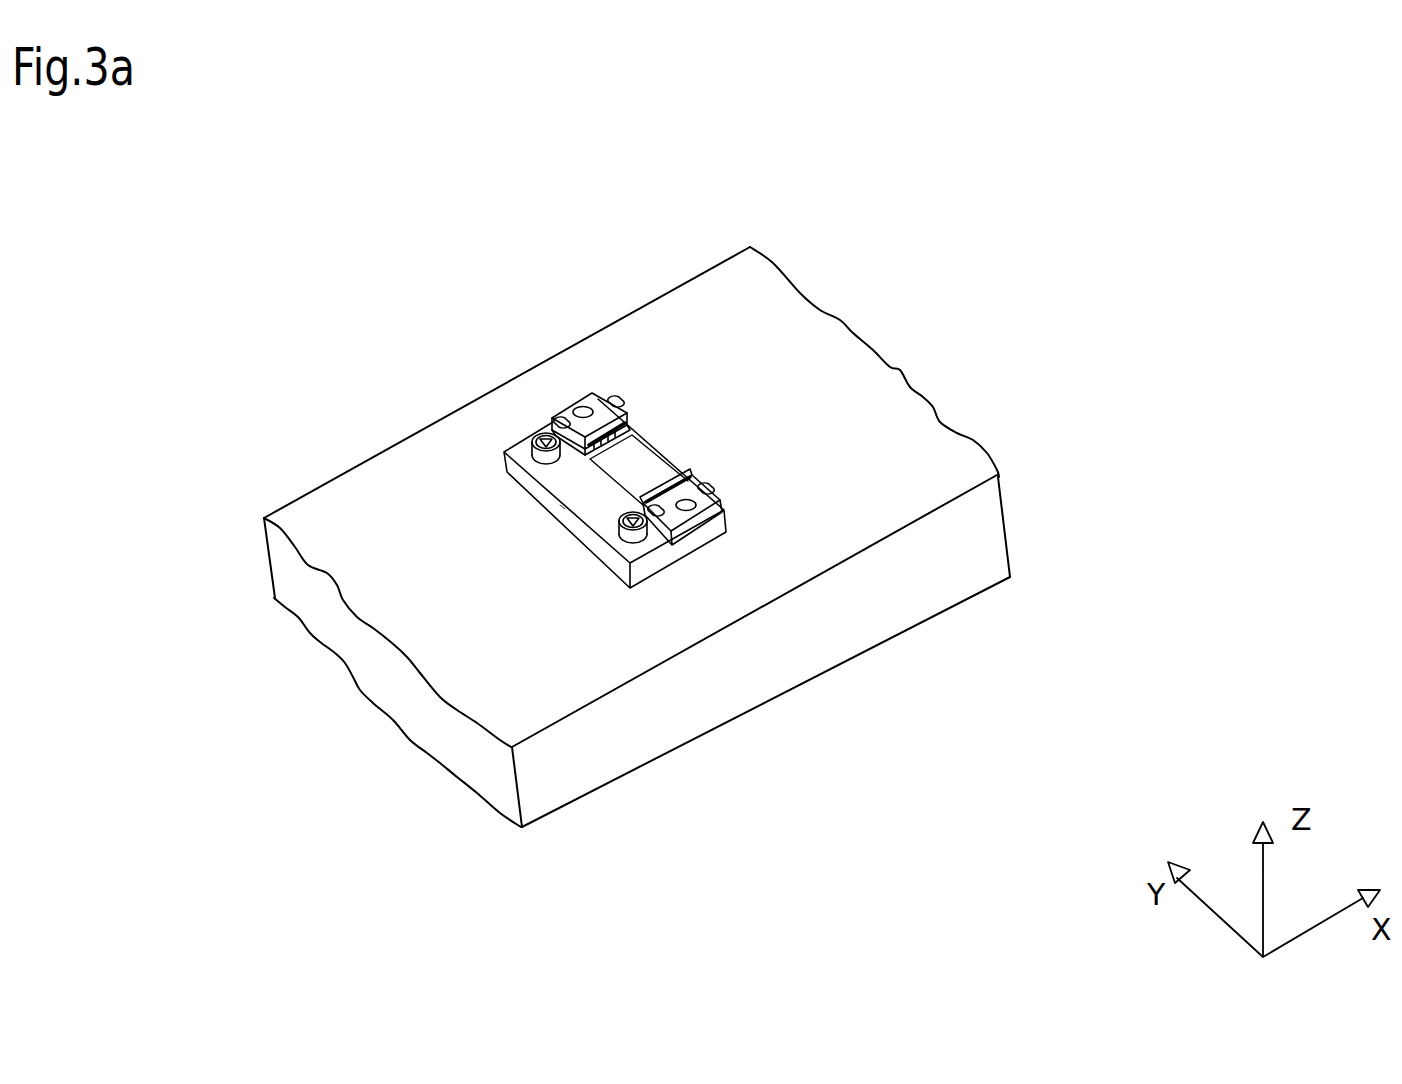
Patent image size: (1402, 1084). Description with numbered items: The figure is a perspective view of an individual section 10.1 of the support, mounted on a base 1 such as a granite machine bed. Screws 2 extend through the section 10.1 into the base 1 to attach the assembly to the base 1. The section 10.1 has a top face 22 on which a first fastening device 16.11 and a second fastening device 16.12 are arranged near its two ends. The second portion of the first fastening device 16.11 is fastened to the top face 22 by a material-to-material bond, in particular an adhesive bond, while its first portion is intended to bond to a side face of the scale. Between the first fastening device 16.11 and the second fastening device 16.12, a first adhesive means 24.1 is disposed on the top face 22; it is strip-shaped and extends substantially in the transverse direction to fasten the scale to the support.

The base 1 is at (330, 517).
The screws 2 is at (533, 433).
The section 10.1 is at (677, 550).
The top face 22 is at (592, 493).
The first adhesive means 24.1 is at (640, 460).
The first fastening device 16.11 is at (703, 515).
The second fastening device 16.12 is at (592, 393).